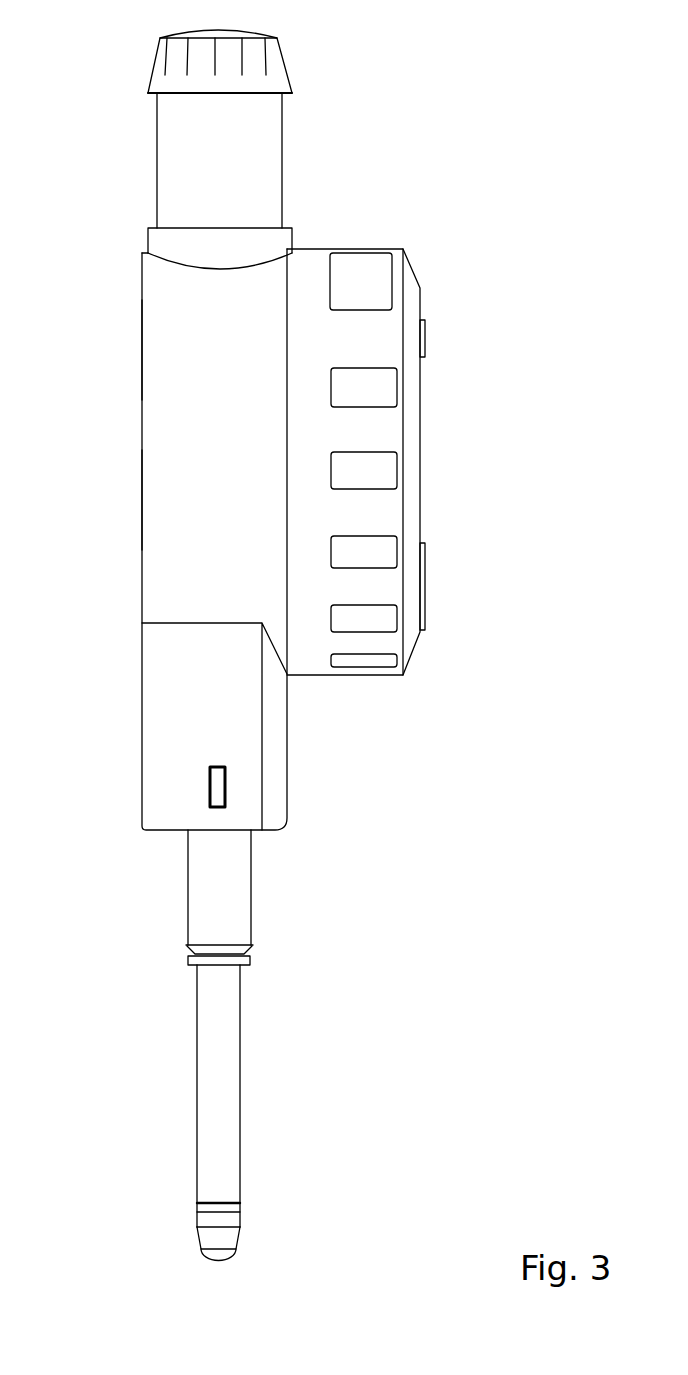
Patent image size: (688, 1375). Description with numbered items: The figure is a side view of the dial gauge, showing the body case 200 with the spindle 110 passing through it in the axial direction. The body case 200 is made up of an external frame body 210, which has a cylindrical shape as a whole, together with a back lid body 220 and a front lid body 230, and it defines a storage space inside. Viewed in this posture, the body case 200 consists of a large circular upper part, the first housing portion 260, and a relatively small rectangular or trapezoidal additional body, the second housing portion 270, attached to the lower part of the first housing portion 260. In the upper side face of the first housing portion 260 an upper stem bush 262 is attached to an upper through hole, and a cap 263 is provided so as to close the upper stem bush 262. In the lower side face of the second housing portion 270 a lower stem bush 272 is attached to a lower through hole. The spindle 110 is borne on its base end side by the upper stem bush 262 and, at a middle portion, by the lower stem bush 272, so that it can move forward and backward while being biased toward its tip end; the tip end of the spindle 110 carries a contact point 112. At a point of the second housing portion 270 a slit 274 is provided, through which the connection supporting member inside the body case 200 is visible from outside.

The spindle 110 is at (200, 1087).
The contact point 112 is at (220, 1255).
The body case 200 is at (148, 290).
The external frame body 210 is at (155, 436).
The back lid body 220 is at (142, 347).
The front lid body 230 is at (405, 280).
The first housing portion 260 is at (148, 497).
The upper stem bush 262 is at (168, 190).
The cap 263 is at (160, 68).
The second housing portion 270 is at (155, 655).
The lower stem bush 272 is at (197, 893).
The slit 274 is at (218, 790).